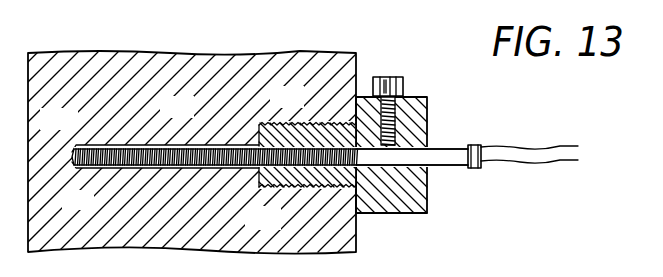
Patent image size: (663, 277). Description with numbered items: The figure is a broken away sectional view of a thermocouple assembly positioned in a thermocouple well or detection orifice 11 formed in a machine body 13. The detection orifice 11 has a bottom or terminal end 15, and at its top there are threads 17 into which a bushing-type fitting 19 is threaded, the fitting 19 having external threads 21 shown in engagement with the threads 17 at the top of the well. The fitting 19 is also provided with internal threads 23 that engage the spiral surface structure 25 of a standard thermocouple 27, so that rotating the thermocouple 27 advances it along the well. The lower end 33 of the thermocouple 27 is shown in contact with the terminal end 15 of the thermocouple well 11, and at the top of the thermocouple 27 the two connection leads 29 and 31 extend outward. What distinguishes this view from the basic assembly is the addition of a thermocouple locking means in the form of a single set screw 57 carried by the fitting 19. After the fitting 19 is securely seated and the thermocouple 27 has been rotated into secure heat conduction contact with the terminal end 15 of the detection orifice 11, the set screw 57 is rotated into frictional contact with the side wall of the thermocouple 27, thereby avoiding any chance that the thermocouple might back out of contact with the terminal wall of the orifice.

The machine body 13 is at (290, 54).
The thermocouple well or detection orifice 11 is at (199, 144).
The lower end of the thermocouple 33 is at (72, 150).
The bottom or terminal end 15 is at (62, 171).
The threads 17 is at (300, 124).
The external threads 21 is at (310, 186).
The bushing-type fitting 19 is at (406, 216).
The internal threads 23 is at (403, 150).
The spiral surface structure 25 is at (443, 147).
The thermocouple 27 is at (450, 165).
The set screw 57 is at (396, 78).
The connection lead 29 is at (545, 146).
The connection lead 31 is at (548, 162).